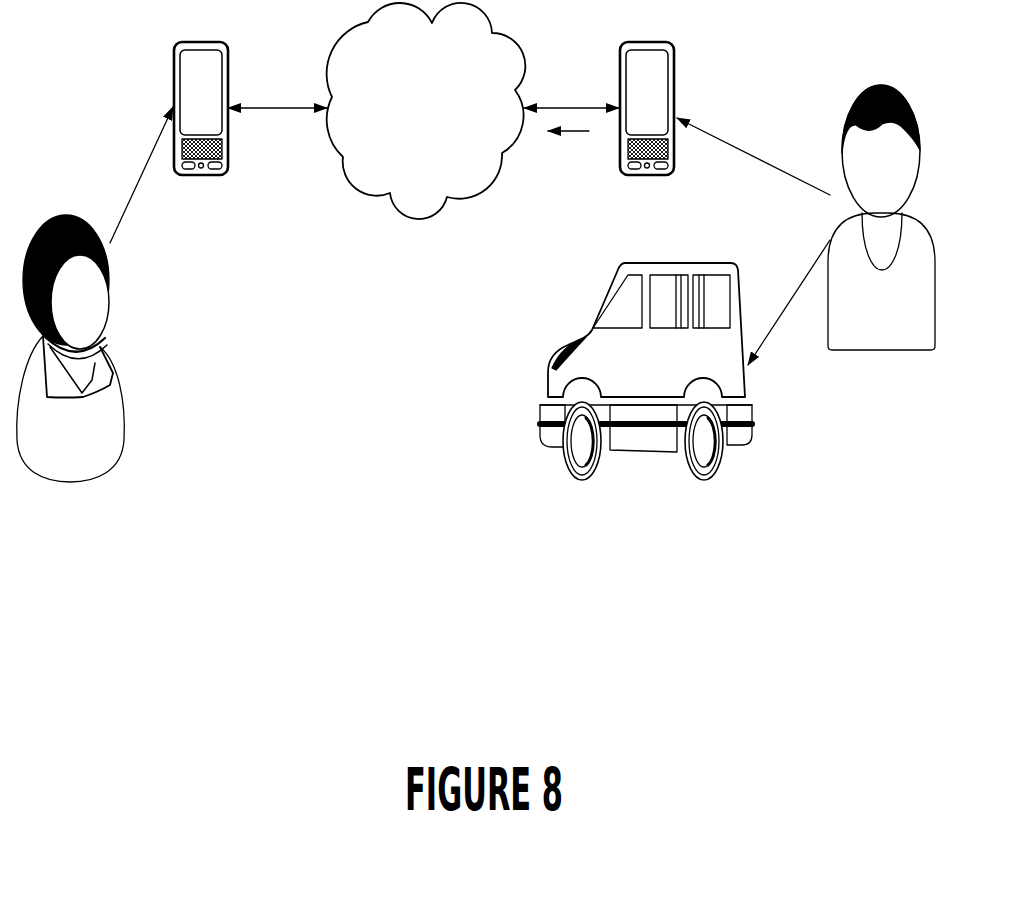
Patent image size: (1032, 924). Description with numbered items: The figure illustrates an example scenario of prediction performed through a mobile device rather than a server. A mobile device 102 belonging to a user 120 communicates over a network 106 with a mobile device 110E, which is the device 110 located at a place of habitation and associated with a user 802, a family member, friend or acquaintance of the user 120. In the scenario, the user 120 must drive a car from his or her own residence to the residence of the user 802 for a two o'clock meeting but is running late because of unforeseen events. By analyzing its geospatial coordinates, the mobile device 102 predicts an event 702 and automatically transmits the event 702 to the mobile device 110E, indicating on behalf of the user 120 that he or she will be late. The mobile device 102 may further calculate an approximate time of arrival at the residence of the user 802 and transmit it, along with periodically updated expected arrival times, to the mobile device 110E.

The user 802 is at (72, 463).
The mobile device 110E is at (204, 176).
The device 110 is at (190, 171).
The network 106 is at (376, 111).
The event 702 is at (571, 104).
The mobile device 102 is at (675, 62).
The user 120 is at (882, 338).